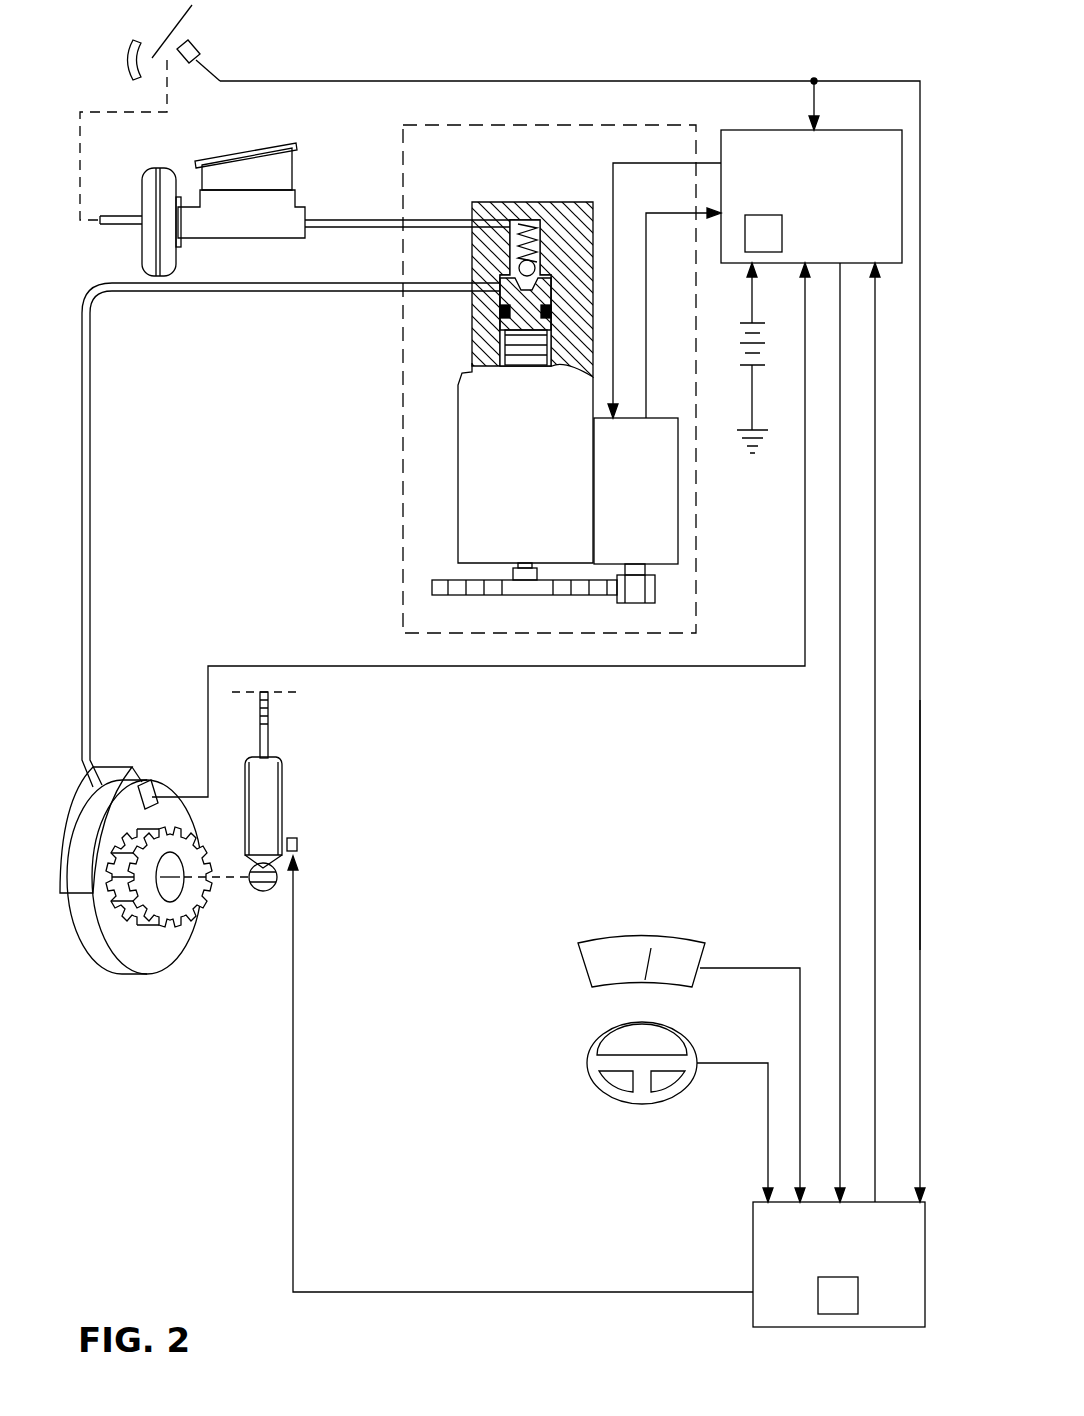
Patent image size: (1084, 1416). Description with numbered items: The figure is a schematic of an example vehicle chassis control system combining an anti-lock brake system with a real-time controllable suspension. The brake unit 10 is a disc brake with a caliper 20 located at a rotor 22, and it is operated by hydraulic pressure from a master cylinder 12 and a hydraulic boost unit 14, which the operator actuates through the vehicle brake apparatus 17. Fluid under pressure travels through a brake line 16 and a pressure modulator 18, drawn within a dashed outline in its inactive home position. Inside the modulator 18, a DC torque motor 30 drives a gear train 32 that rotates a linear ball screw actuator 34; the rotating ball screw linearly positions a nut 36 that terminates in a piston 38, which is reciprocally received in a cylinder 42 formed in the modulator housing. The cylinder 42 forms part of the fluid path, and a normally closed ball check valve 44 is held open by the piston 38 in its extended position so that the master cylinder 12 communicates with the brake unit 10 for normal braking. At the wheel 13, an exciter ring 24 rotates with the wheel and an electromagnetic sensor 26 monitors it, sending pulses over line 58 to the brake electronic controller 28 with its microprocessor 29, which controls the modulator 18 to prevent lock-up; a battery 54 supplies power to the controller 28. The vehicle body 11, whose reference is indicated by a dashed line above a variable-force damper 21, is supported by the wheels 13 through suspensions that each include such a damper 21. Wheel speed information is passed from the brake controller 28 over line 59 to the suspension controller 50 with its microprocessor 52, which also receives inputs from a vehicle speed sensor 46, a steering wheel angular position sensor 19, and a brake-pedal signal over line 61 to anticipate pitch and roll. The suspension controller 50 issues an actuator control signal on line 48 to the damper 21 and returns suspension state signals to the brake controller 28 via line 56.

The brake unit 10 is at (174, 770).
The vehicle body 11 is at (280, 692).
The master cylinder 12 is at (297, 208).
The wheel 13 is at (99, 985).
The hydraulic boost unit 14 is at (150, 195).
The brake line 16 is at (352, 288).
The vehicle brake apparatus 17 is at (152, 59).
The pressure modulator 18 is at (400, 392).
The steering wheel angular position sensor 19 is at (587, 1062).
The caliper 20 is at (115, 775).
The variable-force real time controllable damper 21 is at (268, 820).
The rotor 22 is at (165, 948).
The exciter ring 24 is at (187, 907).
The electromagnetic sensor 26 is at (148, 783).
The electronic controller 28 is at (752, 143).
The microprocessor 29 is at (770, 250).
The DC torque motor 30 is at (658, 430).
The gear train 32 is at (425, 580).
The linear ball screw actuator 34 is at (478, 452).
The nut 36 is at (537, 350).
The piston 38 is at (518, 325).
The cylinder 42 is at (505, 281).
The ball check valve 44 is at (519, 266).
The vehicle speed sensor 46 is at (680, 952).
The line 48 is at (292, 1162).
The suspension controller 50 is at (768, 1315).
The microprocessor 52 is at (843, 1314).
The battery 54 is at (740, 343).
The line 56 is at (875, 862).
The line 58 is at (670, 668).
The signal line 59 is at (838, 778).
The brake pedal signal line 61 is at (920, 826).